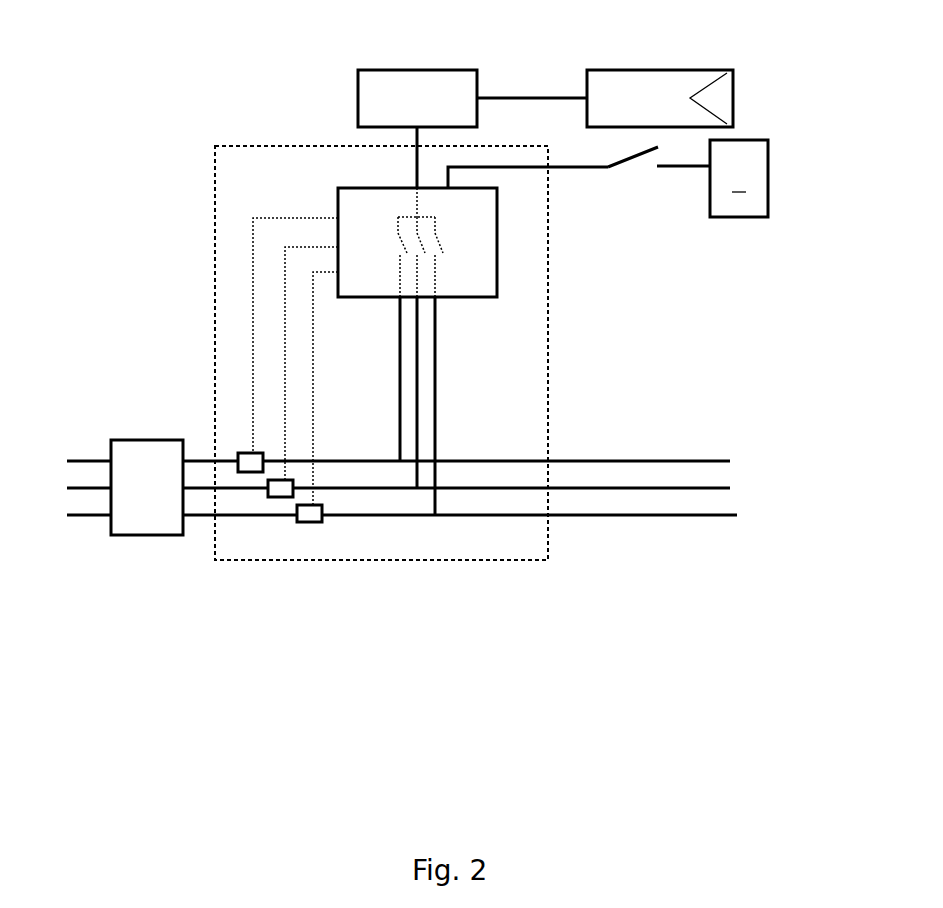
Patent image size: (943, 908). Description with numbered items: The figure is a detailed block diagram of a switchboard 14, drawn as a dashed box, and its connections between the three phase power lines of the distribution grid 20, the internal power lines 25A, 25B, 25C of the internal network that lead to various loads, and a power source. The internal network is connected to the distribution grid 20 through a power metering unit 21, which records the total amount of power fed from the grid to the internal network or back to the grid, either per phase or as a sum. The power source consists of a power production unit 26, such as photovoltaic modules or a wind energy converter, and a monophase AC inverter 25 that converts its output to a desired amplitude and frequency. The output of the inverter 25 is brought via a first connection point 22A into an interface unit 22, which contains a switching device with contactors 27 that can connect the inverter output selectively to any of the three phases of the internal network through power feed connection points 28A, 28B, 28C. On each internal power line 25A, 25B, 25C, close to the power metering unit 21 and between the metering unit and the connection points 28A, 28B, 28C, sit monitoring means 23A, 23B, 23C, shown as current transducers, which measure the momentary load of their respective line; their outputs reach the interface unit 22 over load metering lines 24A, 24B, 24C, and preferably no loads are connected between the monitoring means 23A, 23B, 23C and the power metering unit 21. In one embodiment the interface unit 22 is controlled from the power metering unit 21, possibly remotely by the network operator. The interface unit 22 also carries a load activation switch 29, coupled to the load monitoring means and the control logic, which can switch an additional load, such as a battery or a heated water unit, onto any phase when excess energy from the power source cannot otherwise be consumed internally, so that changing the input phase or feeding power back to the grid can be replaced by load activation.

The switchboard 14 is at (213, 345).
The distribution grid 20 is at (57, 413).
The power metering unit 21 is at (147, 440).
The interface unit 22 is at (494, 264).
The first connection point 22A is at (415, 167).
The monitoring means 23A is at (240, 472).
The monitoring means 23B is at (290, 497).
The monitoring means 23C is at (317, 522).
The load metering line 24A is at (248, 240).
The load metering line 24B is at (290, 245).
The load metering line 24C is at (327, 270).
The monophase AC inverter 25 is at (458, 70).
The internal power line 25A is at (730, 460).
The internal power line 25B is at (730, 487).
The internal power line 25C is at (737, 513).
The power production unit 26 is at (613, 70).
The contactors 27 is at (450, 253).
The power feed connection point 28A is at (400, 400).
The power feed connection point 28B is at (417, 435).
The power feed connection point 28C is at (435, 447).
The load activation switch 29 is at (612, 167).